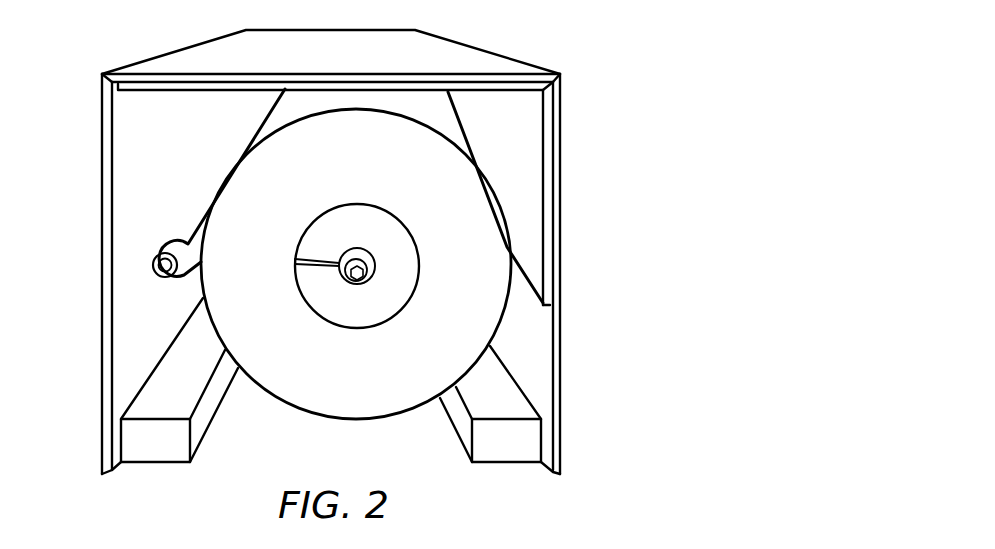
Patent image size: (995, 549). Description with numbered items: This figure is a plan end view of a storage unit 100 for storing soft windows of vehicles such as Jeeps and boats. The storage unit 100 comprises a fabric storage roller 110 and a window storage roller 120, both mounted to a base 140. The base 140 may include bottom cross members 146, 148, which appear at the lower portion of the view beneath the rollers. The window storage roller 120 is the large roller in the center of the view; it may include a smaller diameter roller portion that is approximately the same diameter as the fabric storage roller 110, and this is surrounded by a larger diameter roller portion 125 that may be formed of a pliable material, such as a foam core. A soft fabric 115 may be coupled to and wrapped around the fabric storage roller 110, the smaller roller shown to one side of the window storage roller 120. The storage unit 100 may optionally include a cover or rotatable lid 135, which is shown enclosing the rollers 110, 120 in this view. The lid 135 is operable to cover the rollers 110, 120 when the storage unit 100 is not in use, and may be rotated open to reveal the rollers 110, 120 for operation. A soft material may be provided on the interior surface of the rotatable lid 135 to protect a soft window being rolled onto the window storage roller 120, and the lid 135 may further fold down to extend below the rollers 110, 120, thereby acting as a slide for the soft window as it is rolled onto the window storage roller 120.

The storage unit 100 is at (370, 244).
The fabric storage roller 110 is at (156, 268).
The soft fabric 115 is at (188, 227).
The window storage roller 120 is at (418, 264).
The larger diameter roller portion 125 is at (380, 306).
The cover/rotatable lid 135 is at (562, 143).
The base 140 is at (332, 405).
The bottom cross member 146 is at (160, 450).
The bottom cross member 148 is at (502, 450).